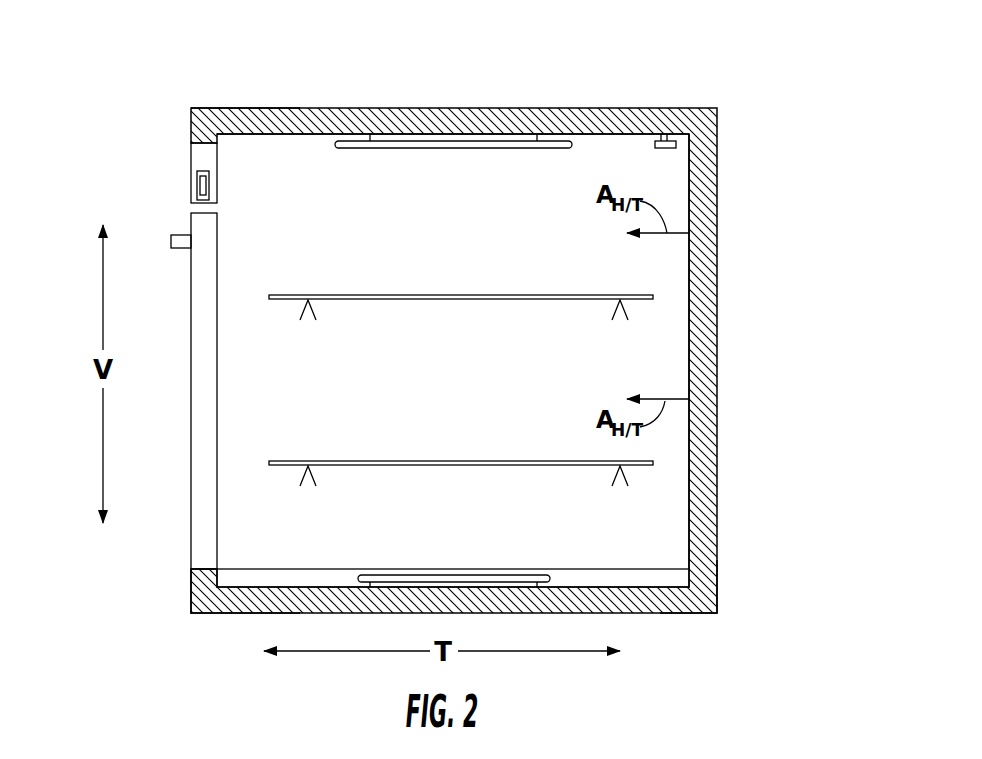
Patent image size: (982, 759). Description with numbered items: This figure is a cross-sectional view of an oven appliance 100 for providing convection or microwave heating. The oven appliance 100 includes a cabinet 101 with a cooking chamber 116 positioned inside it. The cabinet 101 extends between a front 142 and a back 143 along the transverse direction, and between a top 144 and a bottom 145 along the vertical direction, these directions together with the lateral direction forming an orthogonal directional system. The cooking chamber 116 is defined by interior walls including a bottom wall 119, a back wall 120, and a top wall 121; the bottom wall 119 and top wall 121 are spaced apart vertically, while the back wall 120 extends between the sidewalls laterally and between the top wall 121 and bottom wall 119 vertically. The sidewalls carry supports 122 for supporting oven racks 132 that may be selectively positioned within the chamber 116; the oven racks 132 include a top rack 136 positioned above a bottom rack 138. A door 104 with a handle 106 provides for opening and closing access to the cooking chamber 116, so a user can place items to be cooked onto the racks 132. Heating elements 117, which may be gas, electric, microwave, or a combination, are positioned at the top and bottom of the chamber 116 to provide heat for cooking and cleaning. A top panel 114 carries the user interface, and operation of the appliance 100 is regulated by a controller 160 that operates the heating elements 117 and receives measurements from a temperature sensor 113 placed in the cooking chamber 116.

The oven appliance 100 is at (794, 84).
The cabinet 101 is at (717, 260).
The door 104 is at (204, 447).
The handle 106 is at (181, 250).
The temperature sensor 113 is at (665, 140).
The top panel 114 is at (205, 160).
The cooking chamber 116 is at (490, 396).
The heating elements 117 is at (482, 148).
The bottom wall 119 is at (655, 567).
The back wall 120 is at (684, 328).
The top wall 121 is at (254, 142).
The supports 122 is at (615, 316).
The oven racks 132 is at (405, 312).
The top rack 136 is at (485, 295).
The bottom rack 138 is at (485, 461).
The front 142 is at (196, 616).
The back 143 is at (713, 620).
The top 144 is at (186, 118).
The bottom 145 is at (175, 574).
The controller 160 is at (200, 185).